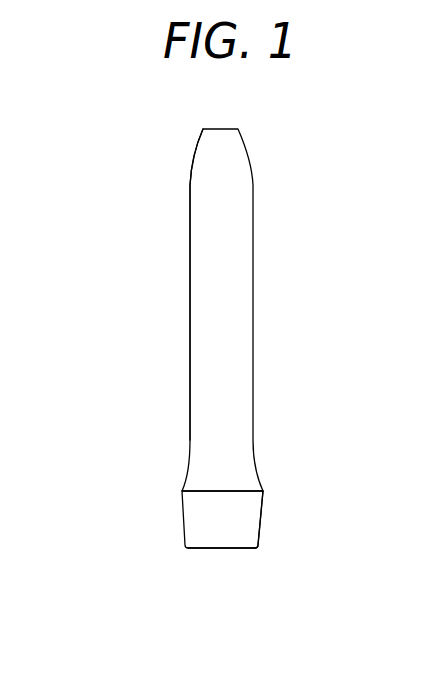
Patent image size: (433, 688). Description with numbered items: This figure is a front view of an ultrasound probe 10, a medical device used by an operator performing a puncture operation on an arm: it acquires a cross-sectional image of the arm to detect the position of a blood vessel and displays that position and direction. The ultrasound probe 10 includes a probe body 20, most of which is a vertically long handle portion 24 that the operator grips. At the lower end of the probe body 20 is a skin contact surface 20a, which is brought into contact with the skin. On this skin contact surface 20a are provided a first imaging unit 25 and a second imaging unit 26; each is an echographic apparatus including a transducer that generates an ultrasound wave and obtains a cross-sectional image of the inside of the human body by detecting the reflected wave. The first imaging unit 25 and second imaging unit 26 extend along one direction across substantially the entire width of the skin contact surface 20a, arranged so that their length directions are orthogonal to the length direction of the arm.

The ultrasound probe 10 is at (203, 362).
The probe body 20 is at (151, 310).
The handle portion 24 is at (190, 315).
The second imaging unit 26 is at (220, 572).
The skin contact surface 20a is at (223, 548).
The first imaging unit 25 is at (238, 548).